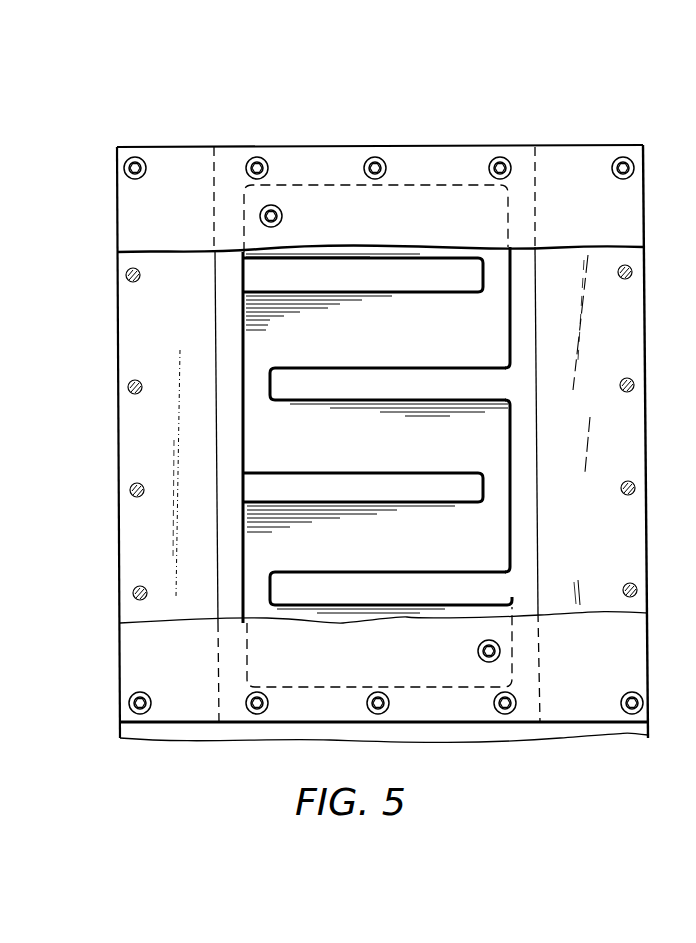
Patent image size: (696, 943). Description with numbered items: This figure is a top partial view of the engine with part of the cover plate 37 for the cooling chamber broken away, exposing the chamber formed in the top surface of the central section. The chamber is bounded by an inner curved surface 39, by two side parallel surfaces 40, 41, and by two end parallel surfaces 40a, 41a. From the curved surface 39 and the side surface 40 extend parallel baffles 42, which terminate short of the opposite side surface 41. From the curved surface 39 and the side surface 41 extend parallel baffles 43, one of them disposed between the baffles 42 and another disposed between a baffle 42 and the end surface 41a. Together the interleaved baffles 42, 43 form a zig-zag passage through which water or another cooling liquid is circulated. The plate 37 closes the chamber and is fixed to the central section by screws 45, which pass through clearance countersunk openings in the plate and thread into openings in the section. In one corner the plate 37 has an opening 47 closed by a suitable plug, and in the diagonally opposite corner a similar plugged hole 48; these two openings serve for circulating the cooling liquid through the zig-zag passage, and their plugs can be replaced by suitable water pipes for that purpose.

The plate 37 is at (172, 176).
The inner curved surface 39 is at (497, 446).
The side parallel surface 40 is at (248, 353).
The end parallel surface 40a is at (432, 189).
The side parallel surface 41 is at (511, 322).
The end parallel surface 41a is at (441, 682).
The baffle 42 is at (417, 279).
The baffle 43 is at (377, 393).
The screw 45 is at (136, 157).
The opening 47 is at (265, 214).
The plugged hole 48 is at (500, 653).